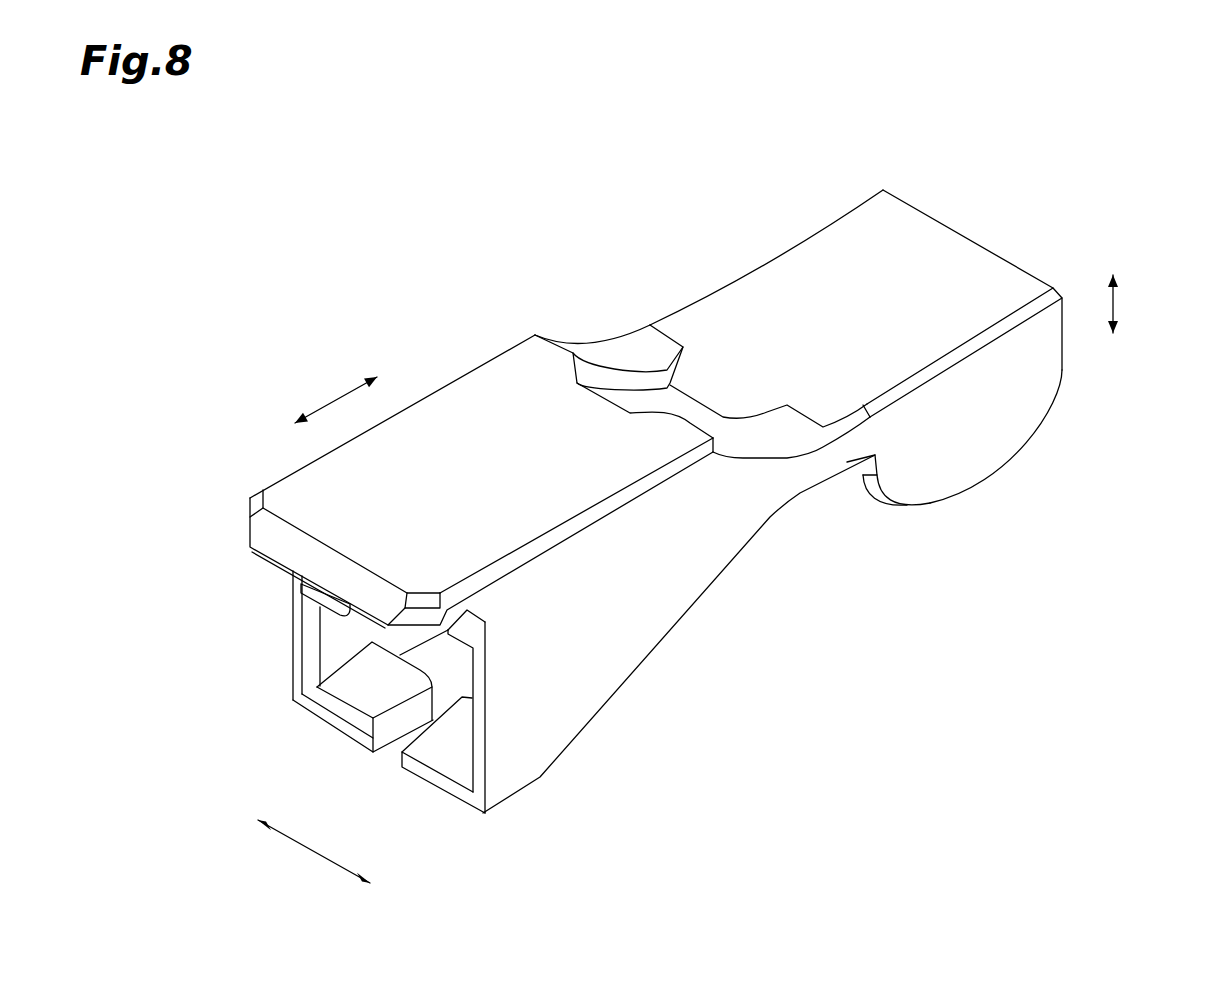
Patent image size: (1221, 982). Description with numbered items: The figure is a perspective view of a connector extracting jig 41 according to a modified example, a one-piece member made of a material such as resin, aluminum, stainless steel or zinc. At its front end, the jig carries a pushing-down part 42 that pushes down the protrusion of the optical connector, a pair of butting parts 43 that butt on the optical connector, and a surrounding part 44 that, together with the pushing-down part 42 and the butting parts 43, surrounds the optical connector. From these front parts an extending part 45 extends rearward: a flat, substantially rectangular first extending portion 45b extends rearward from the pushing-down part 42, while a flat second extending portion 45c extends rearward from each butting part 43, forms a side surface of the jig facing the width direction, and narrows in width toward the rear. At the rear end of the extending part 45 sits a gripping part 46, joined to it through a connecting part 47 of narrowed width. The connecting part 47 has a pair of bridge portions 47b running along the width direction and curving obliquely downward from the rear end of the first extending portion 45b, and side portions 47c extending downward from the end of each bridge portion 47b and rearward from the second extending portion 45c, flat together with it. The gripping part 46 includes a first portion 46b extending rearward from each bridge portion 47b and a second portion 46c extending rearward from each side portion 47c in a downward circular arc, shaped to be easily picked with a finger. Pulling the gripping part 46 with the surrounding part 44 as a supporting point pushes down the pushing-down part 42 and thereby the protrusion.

The connector extracting jig 41 is at (882, 146).
The pushing-down part 42 is at (343, 617).
The butting parts 43 is at (290, 635).
The surrounding part 44 is at (342, 728).
The extending part 45 is at (488, 368).
The first extending portion 45b is at (417, 417).
The second extending portion 45c is at (605, 657).
The gripping part 46 is at (931, 236).
The first portion 46b is at (803, 278).
The second portion 46c is at (988, 440).
The connecting part 47 is at (824, 472).
The bridge portions 47b is at (618, 347).
The side portions 47c is at (852, 470).